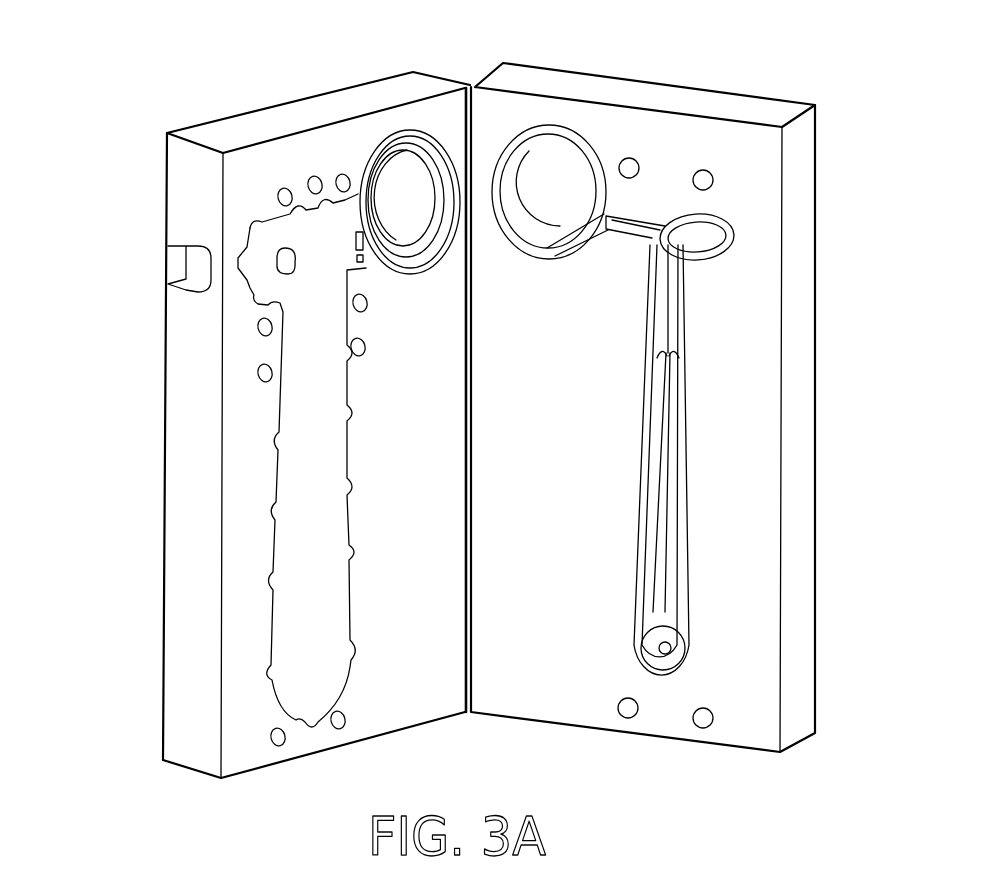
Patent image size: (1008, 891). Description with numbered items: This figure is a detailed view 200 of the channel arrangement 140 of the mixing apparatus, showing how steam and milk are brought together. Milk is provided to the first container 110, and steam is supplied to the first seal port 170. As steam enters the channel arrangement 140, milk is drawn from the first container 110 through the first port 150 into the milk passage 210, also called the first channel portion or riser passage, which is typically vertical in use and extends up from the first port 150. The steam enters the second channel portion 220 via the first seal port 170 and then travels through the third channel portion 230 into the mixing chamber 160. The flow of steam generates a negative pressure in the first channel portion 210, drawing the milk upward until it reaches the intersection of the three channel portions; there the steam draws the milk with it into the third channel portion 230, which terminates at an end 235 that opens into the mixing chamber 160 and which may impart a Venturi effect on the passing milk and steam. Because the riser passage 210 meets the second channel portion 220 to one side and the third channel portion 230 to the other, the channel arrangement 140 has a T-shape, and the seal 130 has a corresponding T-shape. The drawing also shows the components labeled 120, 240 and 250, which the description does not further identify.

The detailed view 200 is at (126, 76).
The first container 110 is at (578, 86).
The second mold block 120 is at (310, 105).
The seal 130 is at (317, 375).
The channel arrangement 140 is at (712, 370).
The first port 150 is at (673, 648).
The mixing chamber 160 is at (556, 186).
The first seal port 170 is at (295, 277).
The milk passage 210 is at (668, 483).
The second channel portion 220 is at (715, 242).
The third channel portion 230 is at (680, 216).
The end 235 is at (606, 218).
The ring bore 240 is at (385, 190).
The tab 250 is at (357, 237).